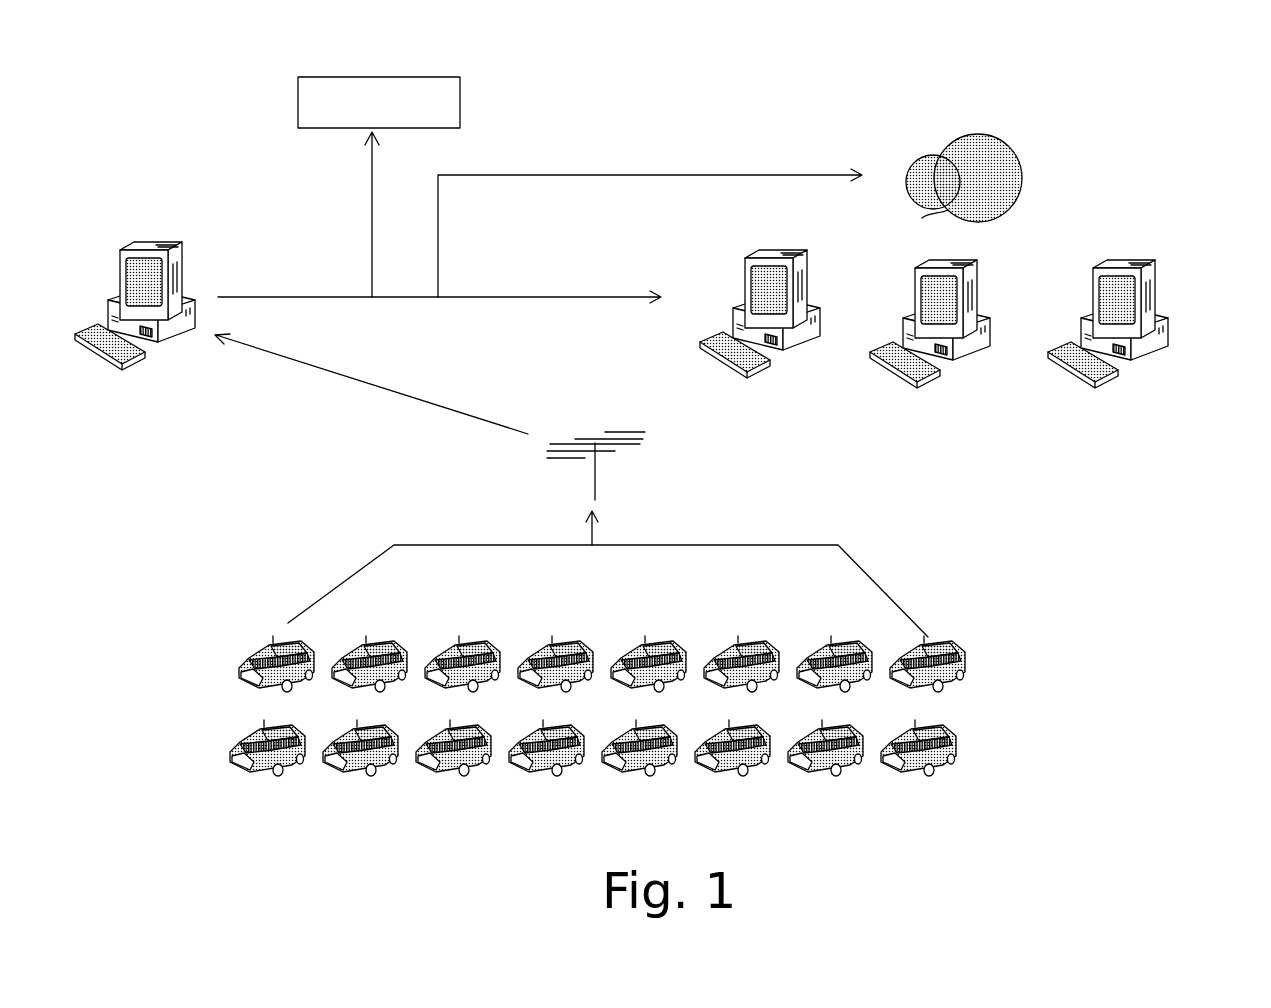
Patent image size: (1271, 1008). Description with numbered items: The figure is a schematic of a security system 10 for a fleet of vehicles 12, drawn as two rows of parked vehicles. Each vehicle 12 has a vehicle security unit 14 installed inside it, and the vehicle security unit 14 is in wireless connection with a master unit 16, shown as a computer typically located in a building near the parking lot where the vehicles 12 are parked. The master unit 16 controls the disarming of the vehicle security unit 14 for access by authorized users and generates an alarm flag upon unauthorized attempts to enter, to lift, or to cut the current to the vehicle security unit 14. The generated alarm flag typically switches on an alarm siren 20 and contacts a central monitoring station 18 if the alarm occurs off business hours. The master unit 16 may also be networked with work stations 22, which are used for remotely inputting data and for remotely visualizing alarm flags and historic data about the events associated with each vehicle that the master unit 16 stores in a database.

The security system 10 is at (1107, 157).
The fleet of vehicles 12 is at (604, 684).
The vehicle security unit 14 is at (270, 644).
The master unit 16 is at (120, 256).
The central monitoring station 18 is at (392, 119).
The alarm siren 20 is at (994, 134).
The work stations 22 is at (800, 274).